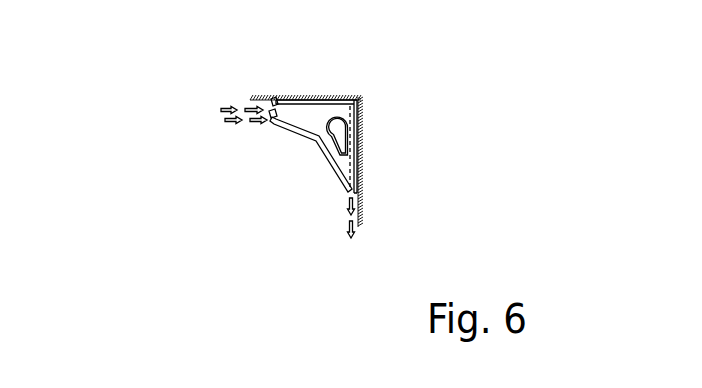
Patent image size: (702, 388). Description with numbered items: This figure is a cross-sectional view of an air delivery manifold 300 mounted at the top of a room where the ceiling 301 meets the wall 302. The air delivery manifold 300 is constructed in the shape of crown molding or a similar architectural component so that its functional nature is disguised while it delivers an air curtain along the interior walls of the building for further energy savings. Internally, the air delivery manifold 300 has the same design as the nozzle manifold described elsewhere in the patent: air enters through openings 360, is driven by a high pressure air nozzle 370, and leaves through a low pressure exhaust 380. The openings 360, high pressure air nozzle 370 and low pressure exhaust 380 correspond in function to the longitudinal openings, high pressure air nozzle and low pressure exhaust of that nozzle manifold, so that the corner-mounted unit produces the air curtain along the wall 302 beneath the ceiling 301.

The air delivery manifold 300 is at (297, 128).
The ceiling 301 is at (308, 100).
The wall 302 is at (364, 187).
The openings 360 is at (270, 108).
The high pressure air nozzle 370 is at (338, 128).
The low pressure exhaust 380 is at (348, 197).